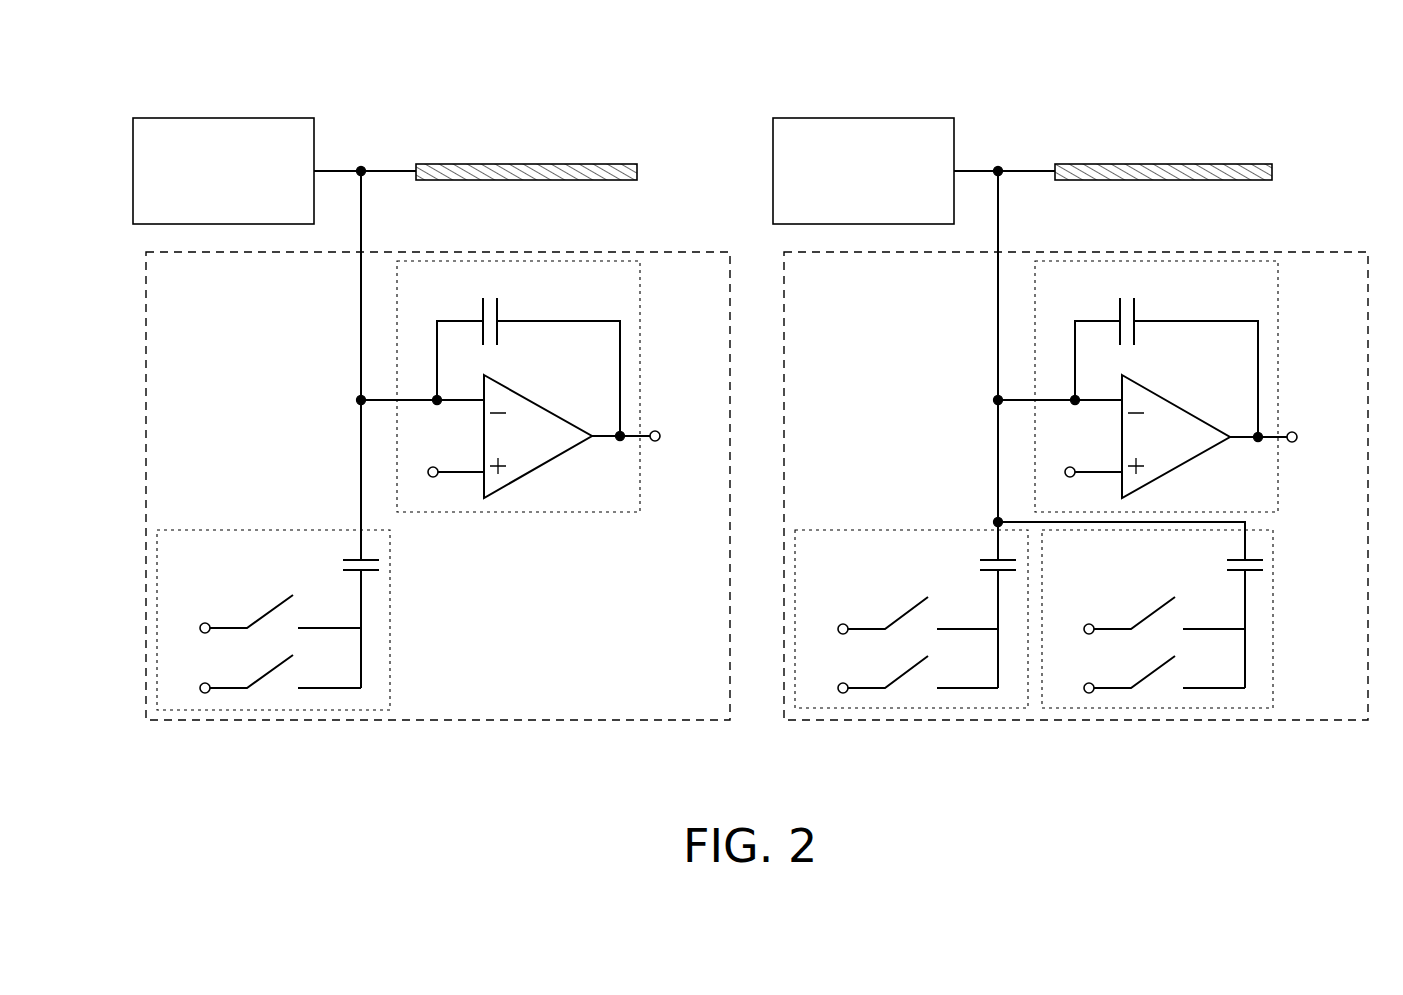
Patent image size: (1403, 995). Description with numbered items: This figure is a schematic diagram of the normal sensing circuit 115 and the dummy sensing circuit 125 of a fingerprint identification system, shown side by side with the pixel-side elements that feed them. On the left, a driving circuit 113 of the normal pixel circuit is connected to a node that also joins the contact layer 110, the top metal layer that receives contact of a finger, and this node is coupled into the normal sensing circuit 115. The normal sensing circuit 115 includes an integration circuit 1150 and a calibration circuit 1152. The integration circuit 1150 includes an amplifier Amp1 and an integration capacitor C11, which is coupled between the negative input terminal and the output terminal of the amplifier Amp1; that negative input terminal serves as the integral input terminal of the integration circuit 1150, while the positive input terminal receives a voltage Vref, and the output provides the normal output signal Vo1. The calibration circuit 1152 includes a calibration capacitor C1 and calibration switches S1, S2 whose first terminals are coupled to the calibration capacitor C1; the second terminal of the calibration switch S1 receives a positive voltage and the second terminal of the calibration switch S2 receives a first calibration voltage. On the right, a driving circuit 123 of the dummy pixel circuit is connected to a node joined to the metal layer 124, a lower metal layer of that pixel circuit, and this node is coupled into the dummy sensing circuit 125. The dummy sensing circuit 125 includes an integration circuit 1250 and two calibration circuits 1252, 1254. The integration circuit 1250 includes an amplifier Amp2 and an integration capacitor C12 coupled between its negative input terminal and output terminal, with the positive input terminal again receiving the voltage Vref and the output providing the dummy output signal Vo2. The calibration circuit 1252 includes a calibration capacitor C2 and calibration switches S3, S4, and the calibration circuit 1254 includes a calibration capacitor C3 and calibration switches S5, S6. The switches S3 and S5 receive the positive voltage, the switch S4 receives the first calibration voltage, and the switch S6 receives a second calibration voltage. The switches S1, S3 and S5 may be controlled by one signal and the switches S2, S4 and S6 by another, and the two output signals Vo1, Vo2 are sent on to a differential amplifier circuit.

The driving circuit 113 is at (220, 118).
The contact layer 110 is at (600, 163).
The normal sensing circuit 115 is at (598, 252).
The integration circuit 1150 is at (535, 419).
The calibration circuit 1152 is at (319, 620).
The driving circuit 123 is at (858, 118).
The metal layer 124 is at (1238, 163).
The dummy sensing circuit 125 is at (1236, 252).
The integration circuit 1250 is at (1182, 386).
The calibration circuit 1252 is at (911, 654).
The calibration circuit 1254 is at (1157, 654).
The integration capacitor C11 is at (528, 354).
The integration capacitor C12 is at (1166, 355).
The calibration capacitor C1 is at (342, 556).
The calibration capacitor C2 is at (980, 556).
The calibration capacitor C3 is at (1226, 556).
The calibration switch S1 is at (280, 614).
The calibration switch S2 is at (280, 674).
The calibration switch S3 is at (918, 615).
The calibration switch S4 is at (918, 674).
The calibration switch S5 is at (1164, 615).
The calibration switch S6 is at (1164, 674).
The amplifier Amp1 is at (540, 403).
The amplifier Amp2 is at (1178, 403).
The normal output signal Vo1 is at (650, 437).
The dummy output signal Vo2 is at (1288, 437).
The voltage Vref is at (444, 454).